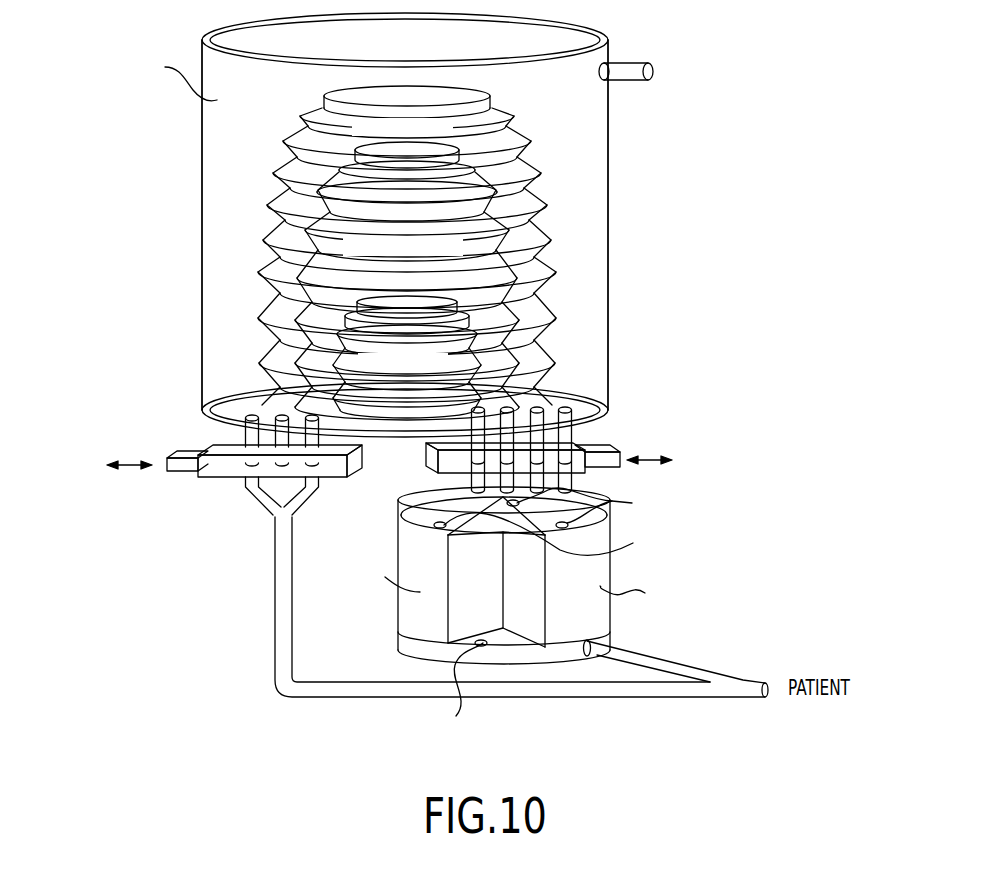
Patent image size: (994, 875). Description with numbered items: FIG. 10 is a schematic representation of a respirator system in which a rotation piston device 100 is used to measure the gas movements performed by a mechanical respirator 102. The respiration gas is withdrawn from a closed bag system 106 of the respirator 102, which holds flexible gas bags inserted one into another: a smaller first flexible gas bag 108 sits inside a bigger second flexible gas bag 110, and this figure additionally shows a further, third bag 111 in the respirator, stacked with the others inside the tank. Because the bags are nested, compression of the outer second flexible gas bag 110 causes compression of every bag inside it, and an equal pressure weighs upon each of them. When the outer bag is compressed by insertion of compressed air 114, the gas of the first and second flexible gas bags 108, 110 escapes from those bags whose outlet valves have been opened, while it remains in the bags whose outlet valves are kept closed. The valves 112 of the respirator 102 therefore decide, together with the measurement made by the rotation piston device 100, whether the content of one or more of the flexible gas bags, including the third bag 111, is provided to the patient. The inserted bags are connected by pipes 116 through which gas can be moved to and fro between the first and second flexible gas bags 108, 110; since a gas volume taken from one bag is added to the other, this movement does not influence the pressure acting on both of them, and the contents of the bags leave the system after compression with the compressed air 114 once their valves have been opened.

The rotation piston device 100 is at (594, 615).
The mechanical respirator 102 is at (186, 150).
The closed bag system 106 is at (203, 203).
The first flexible gas bag 108 is at (493, 356).
The second flexible gas bag 110 is at (493, 267).
The third bag 111 is at (522, 183).
The valves 112 is at (228, 475).
The compressed air 114 is at (637, 73).
The pipes 116 is at (252, 438).